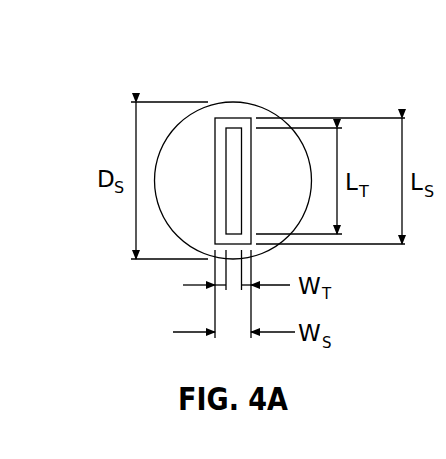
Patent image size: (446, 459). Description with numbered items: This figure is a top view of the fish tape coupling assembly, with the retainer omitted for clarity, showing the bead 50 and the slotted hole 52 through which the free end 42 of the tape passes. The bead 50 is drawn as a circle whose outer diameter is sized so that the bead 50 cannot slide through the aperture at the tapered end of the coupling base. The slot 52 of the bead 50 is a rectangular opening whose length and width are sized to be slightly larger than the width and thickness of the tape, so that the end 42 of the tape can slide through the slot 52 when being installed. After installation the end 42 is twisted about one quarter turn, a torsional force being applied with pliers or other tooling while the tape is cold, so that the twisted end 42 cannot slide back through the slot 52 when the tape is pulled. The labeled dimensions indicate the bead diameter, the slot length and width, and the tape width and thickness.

The bead 50 is at (228, 102).
The slotted hole 52 is at (247, 118).
The free end of tape 42 is at (215, 184).